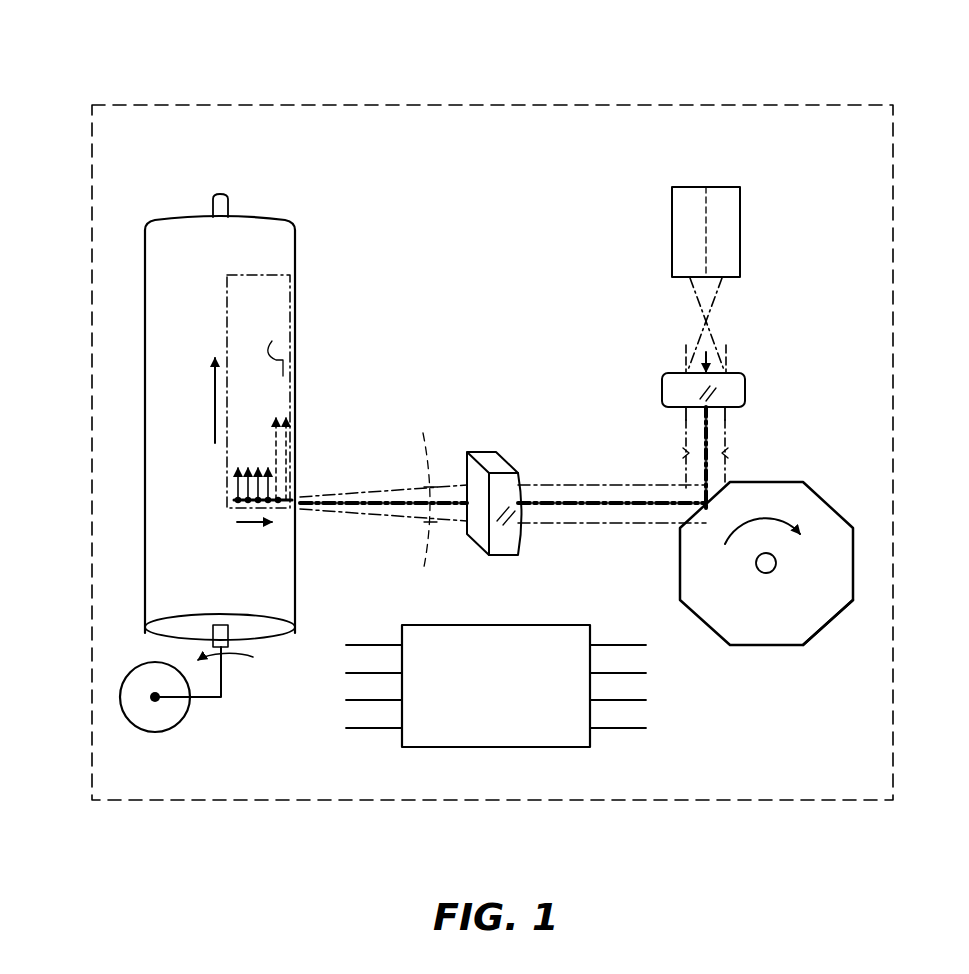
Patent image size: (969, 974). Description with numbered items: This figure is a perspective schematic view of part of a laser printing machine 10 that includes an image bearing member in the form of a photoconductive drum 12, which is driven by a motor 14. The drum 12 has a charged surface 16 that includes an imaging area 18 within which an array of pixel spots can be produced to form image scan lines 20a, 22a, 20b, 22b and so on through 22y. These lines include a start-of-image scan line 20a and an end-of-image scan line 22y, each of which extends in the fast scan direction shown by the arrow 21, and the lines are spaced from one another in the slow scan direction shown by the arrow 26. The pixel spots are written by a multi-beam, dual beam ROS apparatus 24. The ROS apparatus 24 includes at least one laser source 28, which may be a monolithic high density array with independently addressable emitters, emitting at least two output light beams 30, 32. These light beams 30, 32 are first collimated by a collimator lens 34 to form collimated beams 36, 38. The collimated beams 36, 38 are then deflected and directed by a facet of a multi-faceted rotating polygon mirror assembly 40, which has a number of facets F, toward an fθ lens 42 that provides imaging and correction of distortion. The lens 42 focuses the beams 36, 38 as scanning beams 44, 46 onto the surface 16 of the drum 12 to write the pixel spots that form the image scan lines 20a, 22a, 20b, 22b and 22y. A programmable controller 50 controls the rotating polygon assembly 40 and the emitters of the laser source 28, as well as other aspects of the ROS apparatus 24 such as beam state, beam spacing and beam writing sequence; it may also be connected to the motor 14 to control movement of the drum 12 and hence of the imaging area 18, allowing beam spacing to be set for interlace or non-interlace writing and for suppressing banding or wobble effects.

The laser printing machine 10 is at (495, 99).
The photoconductive drum 12 is at (303, 256).
The motor 14 is at (155, 732).
The charged surface 16 is at (156, 317).
The imaging area 18 is at (291, 343).
The start-of-image scan line 20a is at (240, 488).
The image scan line 20b is at (242, 497).
The fast scan direction arrow 21 is at (212, 394).
The image scan line 22a is at (286, 492).
The image scan line 22b is at (289, 500).
The end-of-image scan line 22y is at (300, 497).
The multi-beam ROS apparatus 24 is at (488, 358).
The slow scan direction arrow 26 is at (247, 527).
The laser source 28 is at (740, 231).
The output light beam 30 is at (725, 338).
The output light beam 32 is at (686, 338).
The collimator lens 34 is at (668, 381).
The collimated beam 36 is at (726, 442).
The collimated beam 38 is at (686, 442).
The rotating polygon mirror assembly 40 is at (768, 648).
The fθ lens 42 is at (499, 464).
The scanning beam B1 44 is at (424, 491).
The scanning beam B2 46 is at (424, 562).
The controller 50 is at (495, 747).
The facets F is at (830, 622).